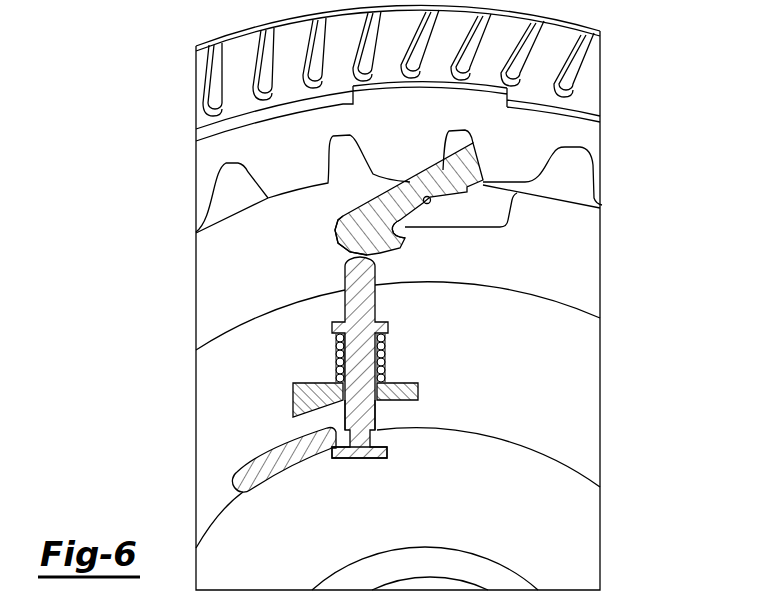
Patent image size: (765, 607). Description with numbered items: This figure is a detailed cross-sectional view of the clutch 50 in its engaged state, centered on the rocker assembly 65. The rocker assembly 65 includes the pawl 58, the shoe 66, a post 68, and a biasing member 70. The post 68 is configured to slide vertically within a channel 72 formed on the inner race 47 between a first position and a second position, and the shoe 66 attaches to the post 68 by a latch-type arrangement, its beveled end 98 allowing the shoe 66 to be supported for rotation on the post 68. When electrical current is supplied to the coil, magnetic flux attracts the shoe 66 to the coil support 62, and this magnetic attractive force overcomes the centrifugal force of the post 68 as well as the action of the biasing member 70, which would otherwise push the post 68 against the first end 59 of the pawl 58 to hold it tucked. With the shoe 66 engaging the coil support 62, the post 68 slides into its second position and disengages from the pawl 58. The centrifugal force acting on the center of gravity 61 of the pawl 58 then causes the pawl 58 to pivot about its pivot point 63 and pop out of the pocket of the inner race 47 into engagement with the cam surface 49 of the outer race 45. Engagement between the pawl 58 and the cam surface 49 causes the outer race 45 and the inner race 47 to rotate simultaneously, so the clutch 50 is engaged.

The clutch 50 is at (168, 160).
The outer race 45 is at (590, 142).
The inner race 47 is at (580, 270).
The cam surface 49 is at (478, 138).
The pawl 58 is at (414, 172).
The first end 59 is at (348, 245).
The center of gravity 61 is at (434, 200).
The pivot point 63 is at (407, 233).
The rocker assembly 65 is at (329, 322).
The biasing member 70 is at (336, 352).
The channel 72 is at (340, 402).
The post 68 is at (364, 404).
The beveled end 98 is at (338, 430).
The shoe 66 is at (245, 478).
The coil support 62 is at (222, 569).